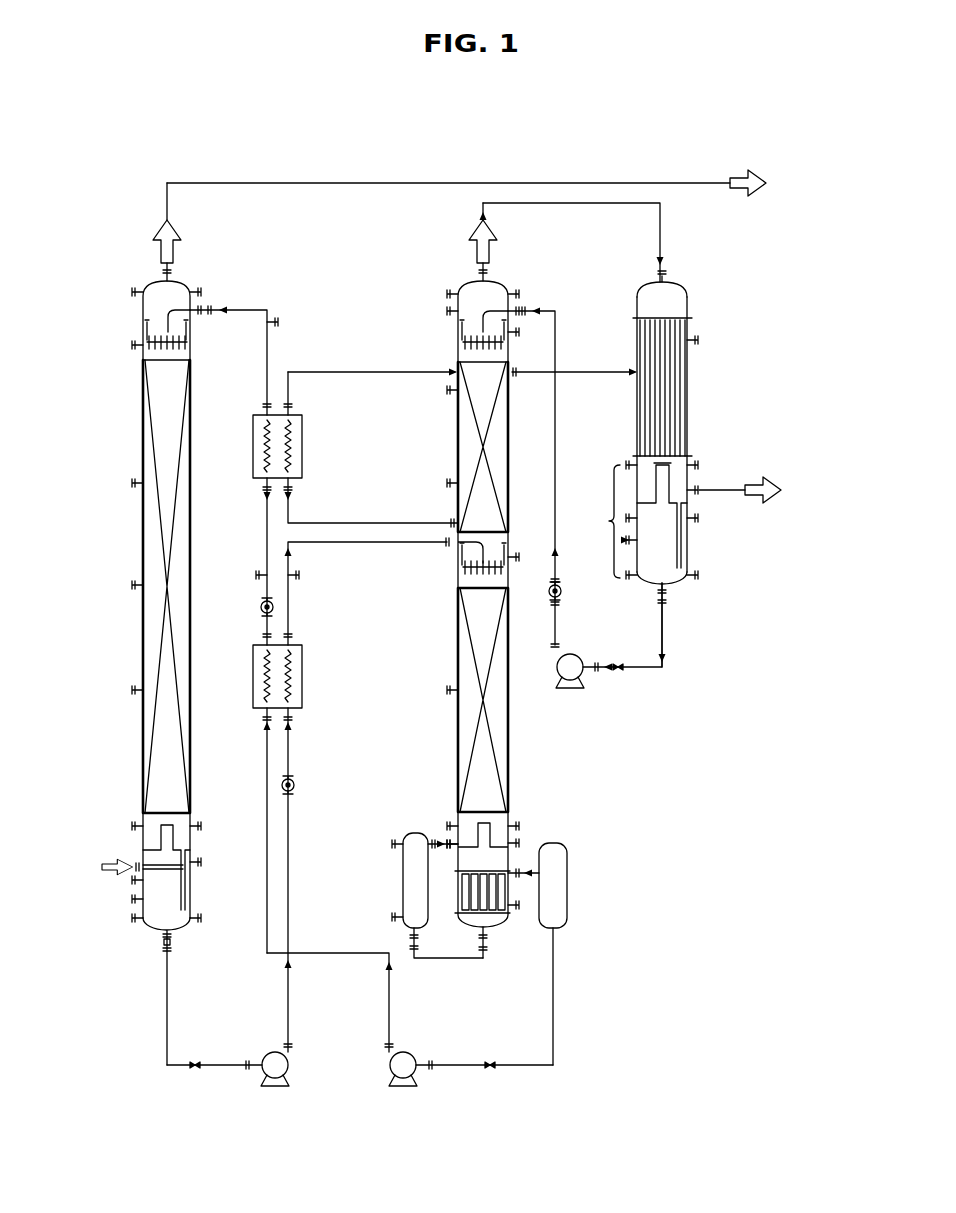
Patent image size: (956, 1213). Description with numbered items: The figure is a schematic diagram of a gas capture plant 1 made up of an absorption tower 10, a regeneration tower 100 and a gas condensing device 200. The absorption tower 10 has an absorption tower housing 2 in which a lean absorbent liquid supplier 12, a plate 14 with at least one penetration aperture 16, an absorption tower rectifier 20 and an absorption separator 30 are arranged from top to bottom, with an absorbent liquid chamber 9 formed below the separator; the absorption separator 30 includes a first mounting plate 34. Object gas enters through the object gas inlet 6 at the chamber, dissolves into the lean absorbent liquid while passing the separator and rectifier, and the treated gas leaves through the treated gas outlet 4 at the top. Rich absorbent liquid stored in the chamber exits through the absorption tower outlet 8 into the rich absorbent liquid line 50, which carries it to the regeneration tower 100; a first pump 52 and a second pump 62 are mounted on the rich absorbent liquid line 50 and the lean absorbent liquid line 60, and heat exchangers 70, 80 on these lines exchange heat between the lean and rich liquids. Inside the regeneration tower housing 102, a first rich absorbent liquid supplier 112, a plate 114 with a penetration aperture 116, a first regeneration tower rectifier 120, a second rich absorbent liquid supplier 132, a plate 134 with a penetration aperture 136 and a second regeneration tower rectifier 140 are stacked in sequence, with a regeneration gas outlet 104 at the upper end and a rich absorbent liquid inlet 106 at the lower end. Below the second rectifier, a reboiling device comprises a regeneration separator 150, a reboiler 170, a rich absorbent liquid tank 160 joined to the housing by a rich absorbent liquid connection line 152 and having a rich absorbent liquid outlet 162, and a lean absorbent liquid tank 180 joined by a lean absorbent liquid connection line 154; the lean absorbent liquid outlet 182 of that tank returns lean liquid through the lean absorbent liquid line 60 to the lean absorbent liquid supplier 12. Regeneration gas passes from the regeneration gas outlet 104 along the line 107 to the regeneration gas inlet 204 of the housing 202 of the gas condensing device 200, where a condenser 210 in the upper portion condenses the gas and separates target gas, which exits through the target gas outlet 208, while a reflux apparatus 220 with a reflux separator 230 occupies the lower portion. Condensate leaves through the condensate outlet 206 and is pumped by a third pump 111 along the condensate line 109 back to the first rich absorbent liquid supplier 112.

The gas capture plant 1 is at (444, 166).
The absorption tower 10 is at (138, 266).
The treated gas outlet 4 is at (173, 276).
The lean absorbent liquid supplier 12 is at (163, 326).
The plate 14 is at (152, 340).
The penetration aperture 16 is at (187, 341).
The absorption tower housing 2 is at (192, 576).
The absorption tower rectifier 20 is at (143, 626).
The absorption separator 30 is at (133, 838).
The first mounting plate 34 is at (158, 828).
The object gas inlet 6 is at (127, 876).
The absorbent liquid chamber 9 is at (150, 918).
The absorption tower outlet 8 is at (175, 943).
The heat exchanger 80 is at (304, 447).
The heat exchanger 70 is at (304, 677).
The lean absorbent liquid line 60 is at (328, 958).
The rich absorbent liquid line 50 is at (215, 1070).
The first pump 52 is at (275, 1088).
The second pump 62 is at (403, 1088).
The regeneration tower 100 is at (434, 278).
The regeneration gas outlet 104 is at (488, 276).
The overhead vapor line 107 is at (578, 205).
The first rich absorbent liquid supplier 112 is at (494, 306).
The plate 114 is at (462, 326).
The penetration aperture 116 is at (508, 326).
The regeneration tower housing 102 is at (458, 362).
The first regeneration tower rectifier 120 is at (466, 430).
The second rich absorbent liquid supplier 132 is at (486, 551).
The plate 134 is at (465, 568).
The penetration aperture 136 is at (506, 562).
The second regeneration tower rectifier 140 is at (466, 660).
The regeneration separator 150 is at (496, 832).
The rich absorbent liquid connection line 152 is at (436, 840).
The lean absorbent liquid connection line 154 is at (531, 870).
The reboiler 170 is at (518, 890).
The rich absorbent liquid tank 160 is at (403, 883).
The rich absorbent liquid outlet 162 is at (416, 940).
The rich absorbent liquid inlet 106 is at (487, 940).
The lean absorbent liquid tank 180 is at (567, 861).
The lean absorbent liquid outlet 182 is at (556, 935).
The third pump 111 is at (572, 690).
The condensate line 109 is at (645, 672).
The gas condensing device 200 is at (708, 281).
The regeneration gas inlet 204 is at (668, 279).
The housing 202 is at (689, 301).
The condenser 210 is at (698, 393).
The reflux apparatus 220 is at (635, 522).
The reflux separator 230 is at (678, 479).
The target gas outlet 208 is at (691, 487).
The condensate outlet 206 is at (668, 592).